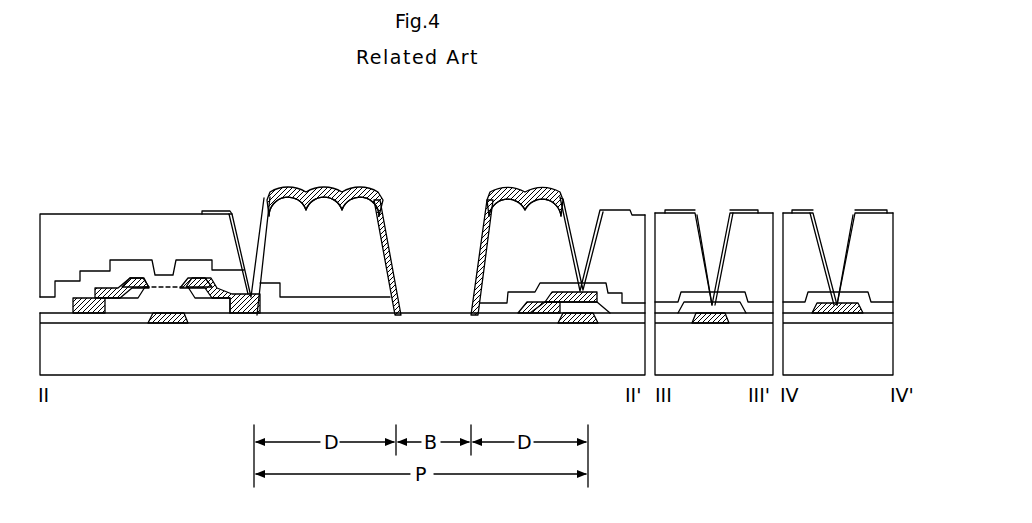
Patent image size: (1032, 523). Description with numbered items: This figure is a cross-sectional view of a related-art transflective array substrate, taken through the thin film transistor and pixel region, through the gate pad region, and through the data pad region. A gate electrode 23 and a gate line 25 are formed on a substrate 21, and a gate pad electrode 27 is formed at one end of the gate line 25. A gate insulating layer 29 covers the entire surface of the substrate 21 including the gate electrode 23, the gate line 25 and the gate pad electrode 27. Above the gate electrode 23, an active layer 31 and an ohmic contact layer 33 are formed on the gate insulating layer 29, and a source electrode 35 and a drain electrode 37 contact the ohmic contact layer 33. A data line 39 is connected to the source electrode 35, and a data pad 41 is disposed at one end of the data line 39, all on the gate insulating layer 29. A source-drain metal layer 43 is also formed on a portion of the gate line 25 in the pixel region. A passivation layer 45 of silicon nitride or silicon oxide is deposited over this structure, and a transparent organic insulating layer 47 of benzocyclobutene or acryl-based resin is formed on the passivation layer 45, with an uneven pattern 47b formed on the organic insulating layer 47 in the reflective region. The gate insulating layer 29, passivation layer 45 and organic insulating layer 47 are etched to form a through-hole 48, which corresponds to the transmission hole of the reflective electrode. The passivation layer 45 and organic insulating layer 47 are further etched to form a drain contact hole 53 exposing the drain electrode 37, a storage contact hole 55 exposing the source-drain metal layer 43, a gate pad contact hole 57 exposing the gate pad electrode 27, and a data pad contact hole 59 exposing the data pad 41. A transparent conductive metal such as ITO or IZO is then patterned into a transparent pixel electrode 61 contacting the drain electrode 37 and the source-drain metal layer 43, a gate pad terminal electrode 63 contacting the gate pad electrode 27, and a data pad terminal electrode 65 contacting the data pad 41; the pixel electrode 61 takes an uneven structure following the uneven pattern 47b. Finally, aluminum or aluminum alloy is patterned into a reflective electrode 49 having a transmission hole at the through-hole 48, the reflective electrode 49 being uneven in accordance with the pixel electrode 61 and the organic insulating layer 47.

The substrate 21 is at (469, 363).
The gate electrode 23 is at (168, 324).
The gate line 25 is at (583, 324).
The gate pad electrode 27 is at (710, 323).
The gate insulating layer 29 is at (224, 316).
The active layer 31 is at (127, 316).
The ohmic contact layer 33 is at (107, 316).
The source electrode 35 is at (140, 280).
The drain electrode 37 is at (193, 280).
The data line 39 is at (83, 277).
The data pad 41 is at (836, 315).
The source-drain metal layer 43 is at (535, 307).
The passivation layer 45 is at (353, 307).
The organic insulating layer 47 is at (325, 204).
The uneven pattern 47b is at (288, 191).
The through-hole 48 is at (433, 213).
The reflective electrode 49 is at (355, 191).
The drain contact hole 53 is at (247, 206).
The storage contact hole 55 is at (580, 216).
The gate pad contact hole 57 is at (712, 216).
The data pad contact hole 59 is at (838, 216).
The transparent pixel electrode 61 is at (438, 316).
The gate pad terminal electrode 63 is at (747, 212).
The data pad terminal electrode 65 is at (877, 212).